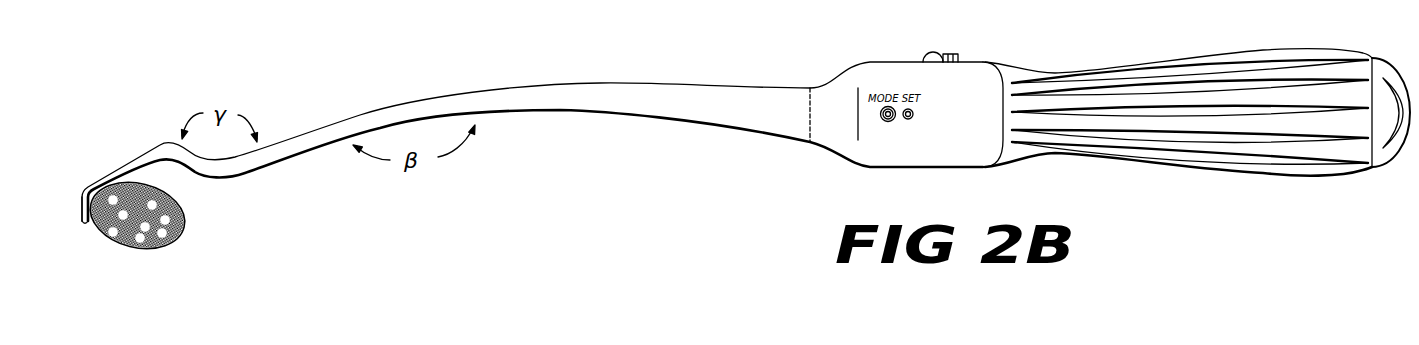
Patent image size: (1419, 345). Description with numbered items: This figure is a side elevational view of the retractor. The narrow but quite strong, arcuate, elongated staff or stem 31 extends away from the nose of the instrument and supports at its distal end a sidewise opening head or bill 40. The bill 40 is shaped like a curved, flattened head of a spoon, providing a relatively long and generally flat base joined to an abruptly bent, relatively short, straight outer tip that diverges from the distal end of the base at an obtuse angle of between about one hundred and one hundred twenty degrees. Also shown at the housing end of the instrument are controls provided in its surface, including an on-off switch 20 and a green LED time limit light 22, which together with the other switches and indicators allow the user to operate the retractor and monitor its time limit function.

The on-off switch 20 is at (158, 163).
The green LED time limit light 22 is at (132, 245).
The staff or stem 31 is at (590, 93).
The head or bill 40 is at (92, 166).